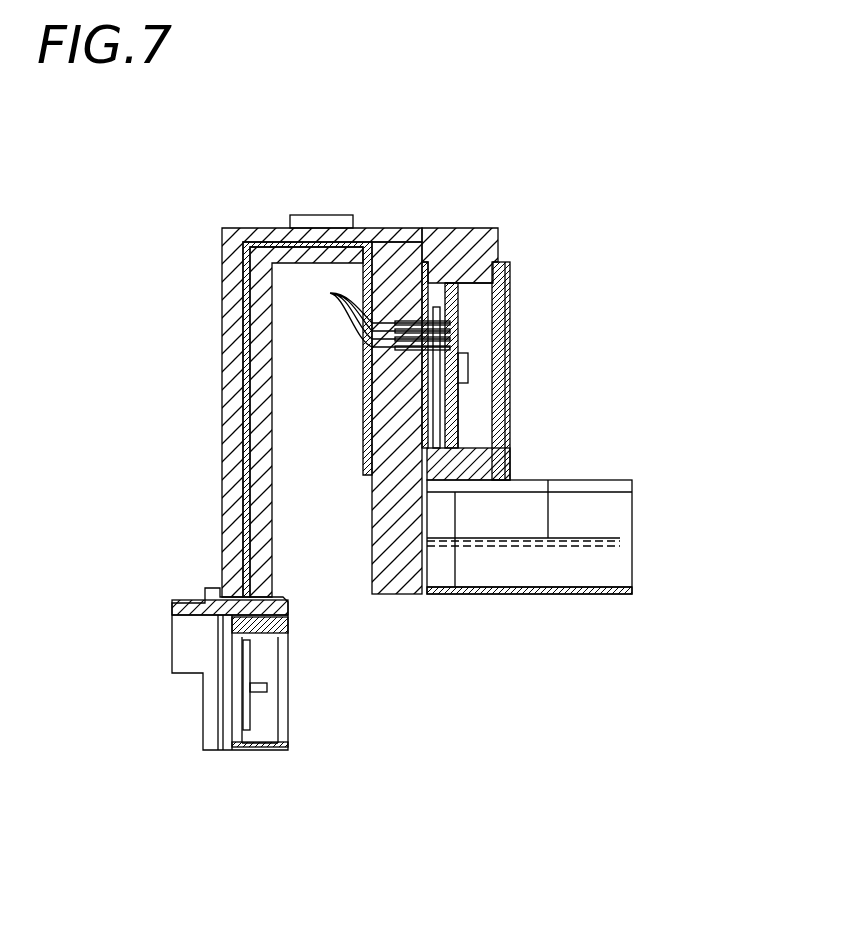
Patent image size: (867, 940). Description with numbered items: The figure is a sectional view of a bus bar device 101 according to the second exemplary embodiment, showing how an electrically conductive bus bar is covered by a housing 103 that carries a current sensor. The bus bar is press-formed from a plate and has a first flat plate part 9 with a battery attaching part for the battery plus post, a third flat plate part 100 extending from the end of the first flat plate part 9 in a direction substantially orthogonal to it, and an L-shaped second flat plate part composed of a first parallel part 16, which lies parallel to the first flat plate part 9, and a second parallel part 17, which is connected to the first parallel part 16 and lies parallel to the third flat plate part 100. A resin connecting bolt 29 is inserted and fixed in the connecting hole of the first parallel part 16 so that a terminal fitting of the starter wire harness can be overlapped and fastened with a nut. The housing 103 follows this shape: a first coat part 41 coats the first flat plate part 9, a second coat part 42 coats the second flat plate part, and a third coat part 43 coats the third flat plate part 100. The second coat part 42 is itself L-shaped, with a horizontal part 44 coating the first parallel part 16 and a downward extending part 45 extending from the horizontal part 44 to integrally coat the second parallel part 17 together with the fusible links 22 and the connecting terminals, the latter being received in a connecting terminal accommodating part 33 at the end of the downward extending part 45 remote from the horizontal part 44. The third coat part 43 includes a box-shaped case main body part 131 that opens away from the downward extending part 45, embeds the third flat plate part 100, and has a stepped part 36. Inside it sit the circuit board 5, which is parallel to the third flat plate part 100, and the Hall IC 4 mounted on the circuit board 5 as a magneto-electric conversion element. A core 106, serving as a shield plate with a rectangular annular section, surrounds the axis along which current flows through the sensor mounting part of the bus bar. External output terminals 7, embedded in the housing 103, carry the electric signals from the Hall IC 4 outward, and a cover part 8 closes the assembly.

The bus bar device 101 is at (656, 234).
The housing 103 is at (412, 475).
The second coat part 42 is at (252, 388).
The horizontal part 44 is at (242, 228).
The downward extending part 45 is at (222, 258).
The second parallel part 17 is at (240, 353).
The connecting bolt 29 is at (320, 213).
The first parallel part 16 is at (373, 238).
The third coat part 43 is at (500, 242).
The case main body part 131 is at (483, 228).
The stepped part 36 is at (440, 283).
The Hall IC 4 is at (468, 365).
The cover part 8 is at (500, 310).
The core 106 is at (508, 375).
The circuit board 5 is at (445, 410).
The third flat plate part 100 is at (510, 460).
The first coat part 41 is at (630, 479).
The first flat plate part 9 is at (612, 540).
The external output terminals 7 is at (328, 292).
The connecting terminal accommodating part 33 is at (257, 750).
The fusible links 22 is at (270, 632).